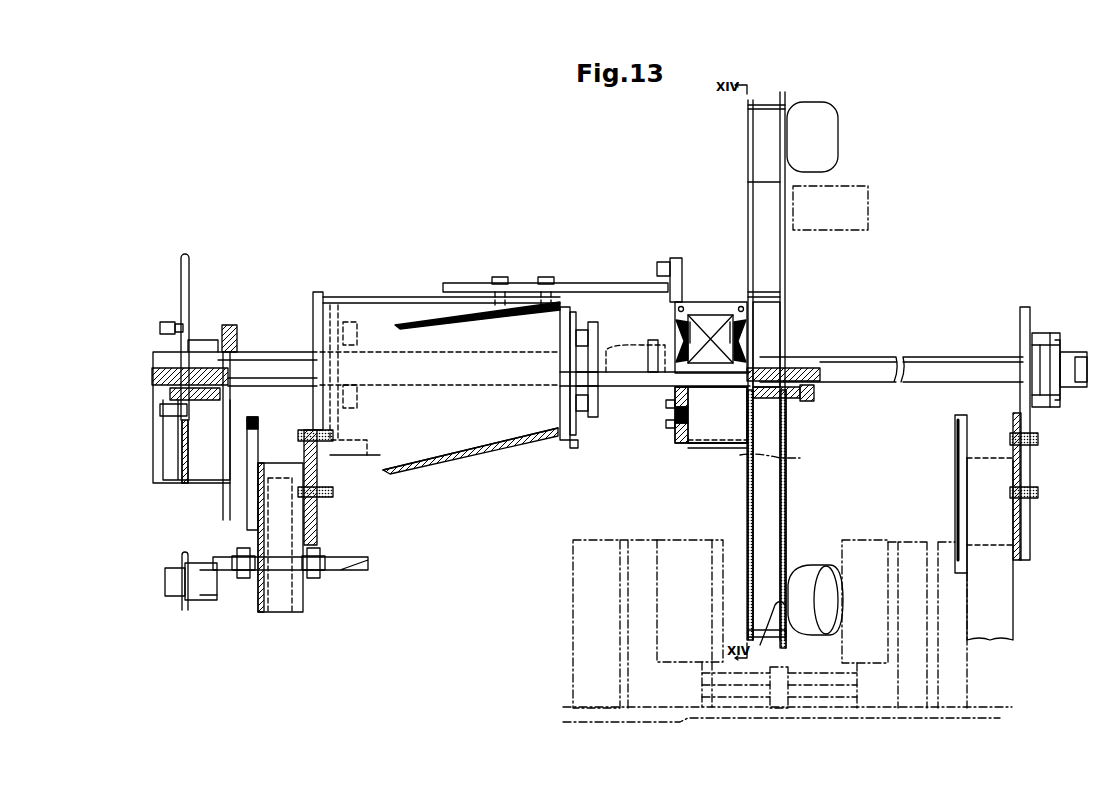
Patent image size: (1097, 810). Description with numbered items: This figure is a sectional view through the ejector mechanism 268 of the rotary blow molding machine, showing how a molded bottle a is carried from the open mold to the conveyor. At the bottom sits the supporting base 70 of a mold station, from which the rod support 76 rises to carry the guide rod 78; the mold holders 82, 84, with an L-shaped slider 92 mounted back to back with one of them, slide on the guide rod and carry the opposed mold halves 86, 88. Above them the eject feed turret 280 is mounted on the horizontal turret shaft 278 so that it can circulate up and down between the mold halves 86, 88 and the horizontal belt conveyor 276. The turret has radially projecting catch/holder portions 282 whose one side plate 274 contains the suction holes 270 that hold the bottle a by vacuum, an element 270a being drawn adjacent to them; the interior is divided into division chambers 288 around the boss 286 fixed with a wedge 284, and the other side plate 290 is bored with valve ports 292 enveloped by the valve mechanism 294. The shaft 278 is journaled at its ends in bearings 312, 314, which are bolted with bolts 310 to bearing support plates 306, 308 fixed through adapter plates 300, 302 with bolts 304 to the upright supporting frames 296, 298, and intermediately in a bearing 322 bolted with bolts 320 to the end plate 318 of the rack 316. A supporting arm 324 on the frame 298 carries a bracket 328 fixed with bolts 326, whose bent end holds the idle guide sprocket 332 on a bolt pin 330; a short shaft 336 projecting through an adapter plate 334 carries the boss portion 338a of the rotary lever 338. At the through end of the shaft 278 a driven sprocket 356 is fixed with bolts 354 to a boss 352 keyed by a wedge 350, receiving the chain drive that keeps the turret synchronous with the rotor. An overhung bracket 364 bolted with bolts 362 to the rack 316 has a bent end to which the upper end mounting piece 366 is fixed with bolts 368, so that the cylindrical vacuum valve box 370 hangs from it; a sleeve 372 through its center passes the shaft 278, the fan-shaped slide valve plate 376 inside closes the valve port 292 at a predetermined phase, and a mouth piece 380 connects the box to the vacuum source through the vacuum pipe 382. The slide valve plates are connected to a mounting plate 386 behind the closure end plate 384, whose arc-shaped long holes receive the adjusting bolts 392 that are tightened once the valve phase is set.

The ejector mechanism 268 is at (703, 186).
The large suction hole 270 is at (771, 636).
The frame post 270a is at (753, 440).
The one side plate 274 is at (785, 257).
The horizontal belt conveyor 276 is at (868, 210).
The horizontal turret shaft 278 is at (930, 357).
The eject feed turret 280 is at (845, 301).
The catch/holder portion 282 is at (762, 143).
The wedge 284 is at (805, 380).
The boss 286 is at (814, 395).
The division chamber 288 is at (753, 495).
The other side plate 290 is at (748, 238).
The valve port 292 is at (753, 425).
The valve mechanism 294 is at (676, 434).
The supporting frame 296 is at (995, 596).
The supporting frame 298 is at (270, 598).
The adapter plate 300 is at (1021, 543).
The adapter plate 302 is at (318, 530).
The bolt 304 is at (333, 434).
The bearing support plate 306 is at (1020, 316).
The bearing support plate 308 is at (313, 302).
The bolt 310 is at (358, 330).
The bearing 312 is at (1050, 390).
The bearing 314 is at (340, 320).
The rack 316 is at (482, 424).
The end plate 318 is at (572, 304).
The bolt 320 is at (594, 324).
The bearing 322 is at (576, 440).
The supporting arm 324 is at (290, 598).
The bolt 326 is at (245, 580).
The bracket 328 is at (345, 570).
The bolt pin 330 is at (165, 582).
The guide sprocket 332 is at (186, 612).
The adapter plate 334 is at (255, 418).
The short shaft 336 is at (163, 430).
The rotary lever 338 is at (237, 328).
The boss portion 338a is at (205, 463).
The wedge 350 is at (225, 378).
The boss 352 is at (222, 395).
The bolt 354 is at (165, 322).
The driven sprocket 356 is at (190, 283).
The bolt 362 is at (497, 277).
The overhung bracket 364 is at (592, 283).
The upper end mounting piece 366 is at (682, 276).
The bolt 368 is at (662, 262).
The vacuum valve box 370 is at (715, 446).
The sleeve 372 is at (720, 387).
The slide valve plate 376 is at (775, 458).
The mouth piece 380 is at (720, 355).
The vacuum pipe 382 is at (610, 345).
The closure end plate 384 is at (676, 395).
The mounting plate 386 is at (680, 443).
The adjusting bolt 392 is at (672, 423).
The supporting base 70 is at (970, 715).
The rod support 76 is at (788, 690).
The guide rod 78 is at (710, 690).
The mold holder 82 is at (910, 558).
The mold holder 84 is at (643, 556).
The mold half 86 is at (870, 558).
The mold half 88 is at (685, 556).
The L-shaped slider 92 is at (597, 556).
The molded bottle a is at (838, 124).